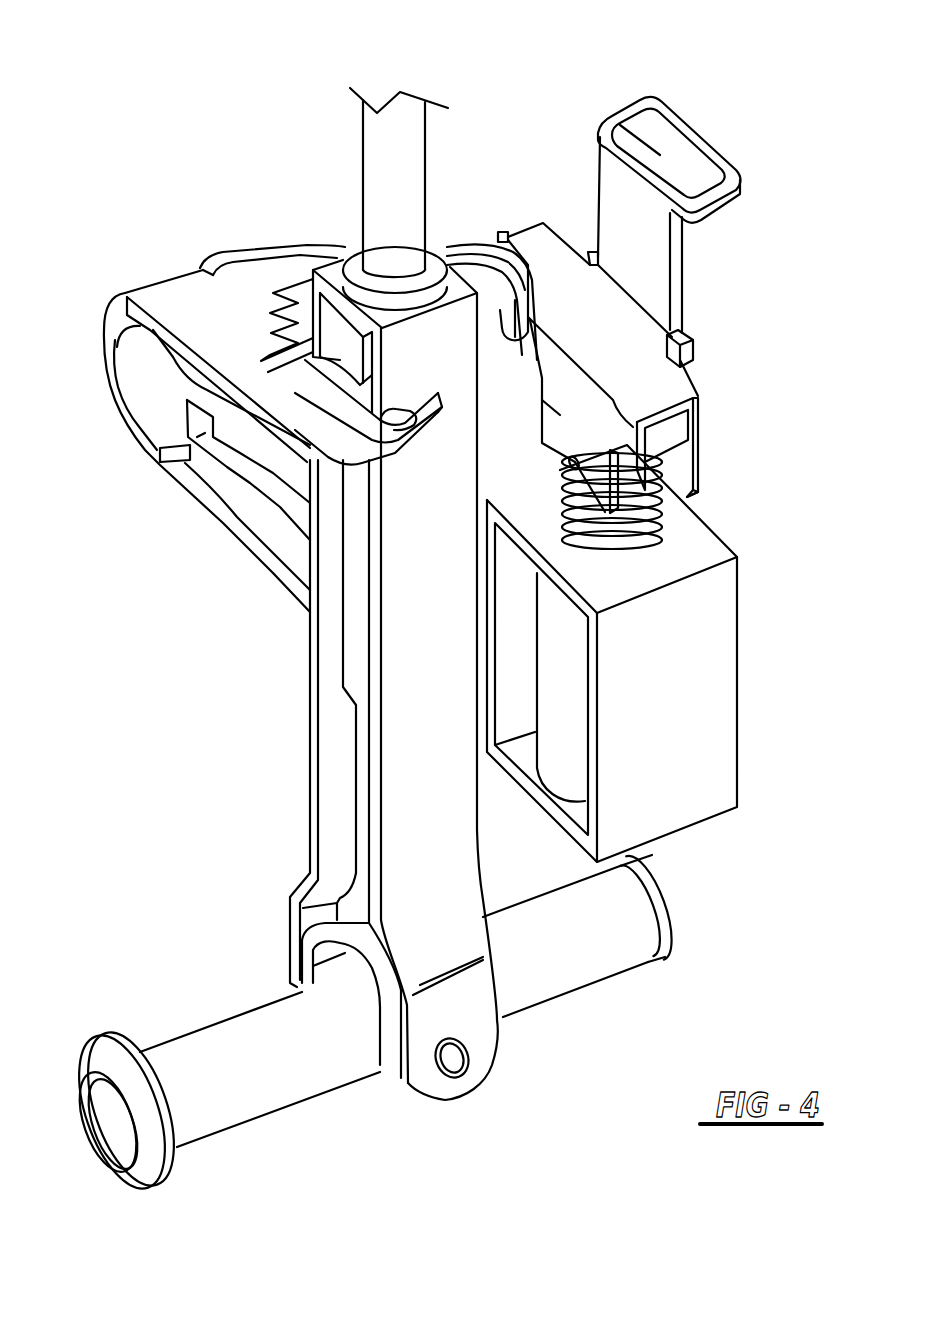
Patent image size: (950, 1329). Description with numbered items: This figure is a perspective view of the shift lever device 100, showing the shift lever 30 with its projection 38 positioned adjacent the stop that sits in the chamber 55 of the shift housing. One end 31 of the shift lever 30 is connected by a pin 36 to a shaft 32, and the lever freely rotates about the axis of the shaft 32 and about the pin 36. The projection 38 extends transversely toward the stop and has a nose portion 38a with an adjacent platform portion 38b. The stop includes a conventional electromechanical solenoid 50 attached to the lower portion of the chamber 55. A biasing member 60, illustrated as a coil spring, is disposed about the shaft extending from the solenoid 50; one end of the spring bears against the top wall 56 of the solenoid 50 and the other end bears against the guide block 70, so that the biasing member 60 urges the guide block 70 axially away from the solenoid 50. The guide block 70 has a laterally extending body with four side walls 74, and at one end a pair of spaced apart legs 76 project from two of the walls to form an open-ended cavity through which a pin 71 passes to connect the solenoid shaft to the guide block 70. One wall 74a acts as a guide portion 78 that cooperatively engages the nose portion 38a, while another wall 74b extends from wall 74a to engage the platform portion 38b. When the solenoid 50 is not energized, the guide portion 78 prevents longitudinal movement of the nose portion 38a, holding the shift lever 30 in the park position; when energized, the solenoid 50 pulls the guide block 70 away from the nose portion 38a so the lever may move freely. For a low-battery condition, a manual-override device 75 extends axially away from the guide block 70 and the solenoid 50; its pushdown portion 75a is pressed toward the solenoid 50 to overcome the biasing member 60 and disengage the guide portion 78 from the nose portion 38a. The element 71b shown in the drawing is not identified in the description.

The shift lever device 100 is at (78, 200).
The shift lever 30 is at (372, 150).
The end of shift lever 31 is at (313, 735).
The shaft 32 is at (230, 1015).
The pin 36 is at (453, 1066).
The projection 38 is at (452, 240).
The nose portion 38a is at (482, 247).
The platform portion 38b is at (514, 336).
The solenoid 50 is at (562, 765).
The chamber 55 is at (517, 762).
The top wall 56 is at (707, 547).
The biasing member 60 is at (663, 505).
The guide block 70 is at (712, 410).
The pin 71 is at (542, 428).
The plate lower portion 71b is at (567, 385).
The side walls 74 is at (609, 400).
The wall 74a is at (508, 236).
The wall 74b is at (683, 360).
The manual-override device 75 is at (718, 135).
The pushdown portion 75a is at (668, 130).
The legs 76 is at (560, 493).
The guide portion 78 is at (610, 432).